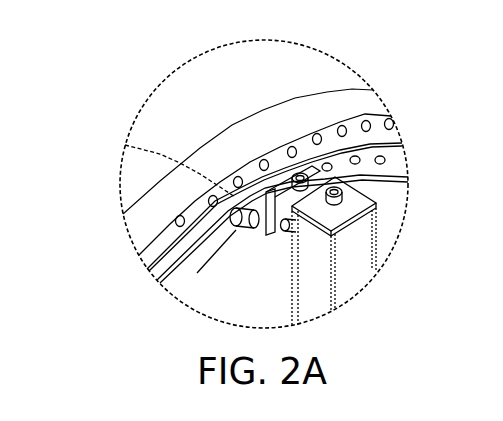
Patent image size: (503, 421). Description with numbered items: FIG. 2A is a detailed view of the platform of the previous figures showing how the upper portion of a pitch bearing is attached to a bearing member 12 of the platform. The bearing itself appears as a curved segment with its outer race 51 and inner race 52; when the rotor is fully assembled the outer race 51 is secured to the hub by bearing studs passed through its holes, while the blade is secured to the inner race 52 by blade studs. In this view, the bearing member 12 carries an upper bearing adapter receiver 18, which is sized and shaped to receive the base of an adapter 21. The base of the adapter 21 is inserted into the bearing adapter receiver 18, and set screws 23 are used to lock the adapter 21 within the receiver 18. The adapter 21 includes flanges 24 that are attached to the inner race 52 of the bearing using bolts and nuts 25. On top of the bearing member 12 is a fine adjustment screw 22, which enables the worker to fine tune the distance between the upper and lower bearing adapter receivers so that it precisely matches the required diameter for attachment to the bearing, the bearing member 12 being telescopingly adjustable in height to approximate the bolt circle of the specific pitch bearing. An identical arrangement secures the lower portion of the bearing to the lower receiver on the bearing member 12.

The bearing member 12 is at (382, 227).
The upper bearing adapter receiver 18 is at (217, 278).
The adapter 21 is at (218, 89).
The fine adjustment screw 22 is at (345, 186).
The set screws 23 is at (376, 272).
The flanges 24 is at (323, 136).
The bolts and nuts 25 is at (125, 145).
The outer race 51 is at (132, 224).
The inner race 52 is at (222, 209).